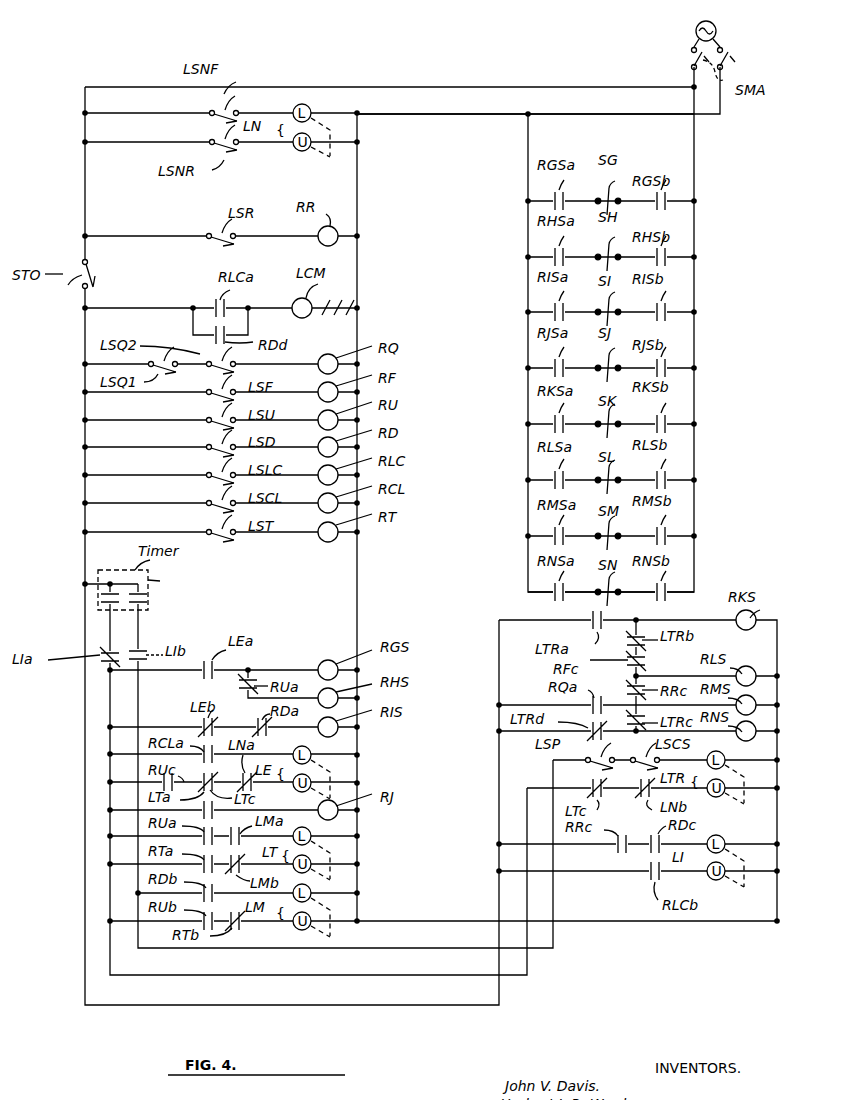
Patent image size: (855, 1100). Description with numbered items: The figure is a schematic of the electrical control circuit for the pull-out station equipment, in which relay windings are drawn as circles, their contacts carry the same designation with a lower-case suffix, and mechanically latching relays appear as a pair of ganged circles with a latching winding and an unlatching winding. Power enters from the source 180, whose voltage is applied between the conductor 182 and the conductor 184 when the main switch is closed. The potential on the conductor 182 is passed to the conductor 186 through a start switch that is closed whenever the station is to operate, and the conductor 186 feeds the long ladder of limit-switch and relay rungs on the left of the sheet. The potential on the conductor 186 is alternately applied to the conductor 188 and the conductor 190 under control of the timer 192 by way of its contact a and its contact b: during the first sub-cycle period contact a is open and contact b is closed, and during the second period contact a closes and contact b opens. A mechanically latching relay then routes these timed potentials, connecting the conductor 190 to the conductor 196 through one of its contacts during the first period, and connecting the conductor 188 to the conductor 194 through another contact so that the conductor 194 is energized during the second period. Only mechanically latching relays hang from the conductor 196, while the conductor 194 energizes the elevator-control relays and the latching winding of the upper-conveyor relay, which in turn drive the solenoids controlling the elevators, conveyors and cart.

The source 180 is at (696, 31).
The conductor 182 is at (447, 86).
The conductor 184 is at (605, 114).
The conductor 186 is at (85, 490).
The conductor 188 is at (110, 628).
The conductor 190 is at (140, 632).
The timer 192 is at (160, 581).
The conductor 194 is at (110, 700).
The conductor 196 is at (138, 690).
The timer contact a is at (102, 601).
The timer contact b is at (146, 601).